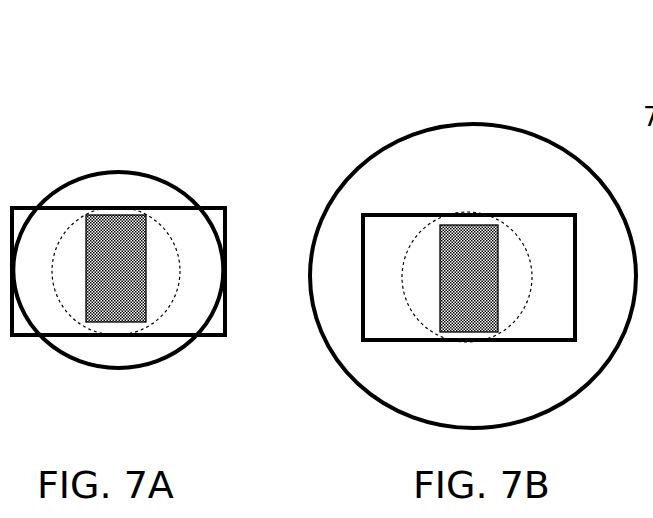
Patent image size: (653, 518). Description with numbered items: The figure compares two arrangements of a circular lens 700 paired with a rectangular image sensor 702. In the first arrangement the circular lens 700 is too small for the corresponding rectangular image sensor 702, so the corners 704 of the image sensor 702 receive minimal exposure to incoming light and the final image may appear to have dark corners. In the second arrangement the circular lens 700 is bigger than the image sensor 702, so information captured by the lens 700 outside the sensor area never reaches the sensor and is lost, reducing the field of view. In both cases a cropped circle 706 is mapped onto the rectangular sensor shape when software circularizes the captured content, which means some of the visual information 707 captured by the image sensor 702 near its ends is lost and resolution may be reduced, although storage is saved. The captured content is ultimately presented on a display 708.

In FIG. 7A, the circular lens 700 is at (112, 172).
In FIG. 7B, the circular lens 700 is at (502, 125).
In FIG. 7A, the rectangular image sensor 702 is at (18, 206).
In FIG. 7B, the rectangular image sensor 702 is at (380, 215).
In FIG. 7A, the corners of the image sensor 704 is at (217, 222).
In FIG. 7A, the cropped circle 706 is at (163, 227).
In FIG. 7B, the cropped circle 706 is at (428, 228).
In FIG. 7A, the visual information 707 is at (200, 278).
In FIG. 7B, the visual information 707 is at (296, 391).
In FIG. 7A, the display 708 is at (116, 268).
In FIG. 7B, the display 708 is at (469, 278).